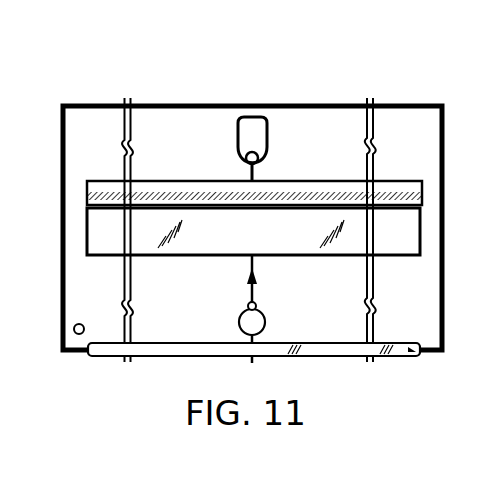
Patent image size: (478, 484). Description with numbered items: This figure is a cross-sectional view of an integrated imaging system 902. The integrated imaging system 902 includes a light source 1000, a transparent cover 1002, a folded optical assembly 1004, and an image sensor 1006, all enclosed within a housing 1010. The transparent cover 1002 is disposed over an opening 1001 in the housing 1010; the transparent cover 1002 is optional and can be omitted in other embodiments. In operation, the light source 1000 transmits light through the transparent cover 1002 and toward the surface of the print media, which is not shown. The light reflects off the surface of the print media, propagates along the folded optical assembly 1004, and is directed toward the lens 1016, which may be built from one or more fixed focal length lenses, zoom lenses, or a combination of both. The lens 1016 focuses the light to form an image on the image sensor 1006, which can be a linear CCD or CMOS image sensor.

The integrated imaging system 902 is at (104, 66).
The housing 1010 is at (61, 178).
The lens 1016 is at (178, 181).
The folded optical assembly 1004 is at (178, 255).
The image sensor 1006 is at (270, 138).
The light source 1000 is at (242, 313).
The transparent cover 1002 is at (322, 357).
The opening 1001 is at (418, 352).